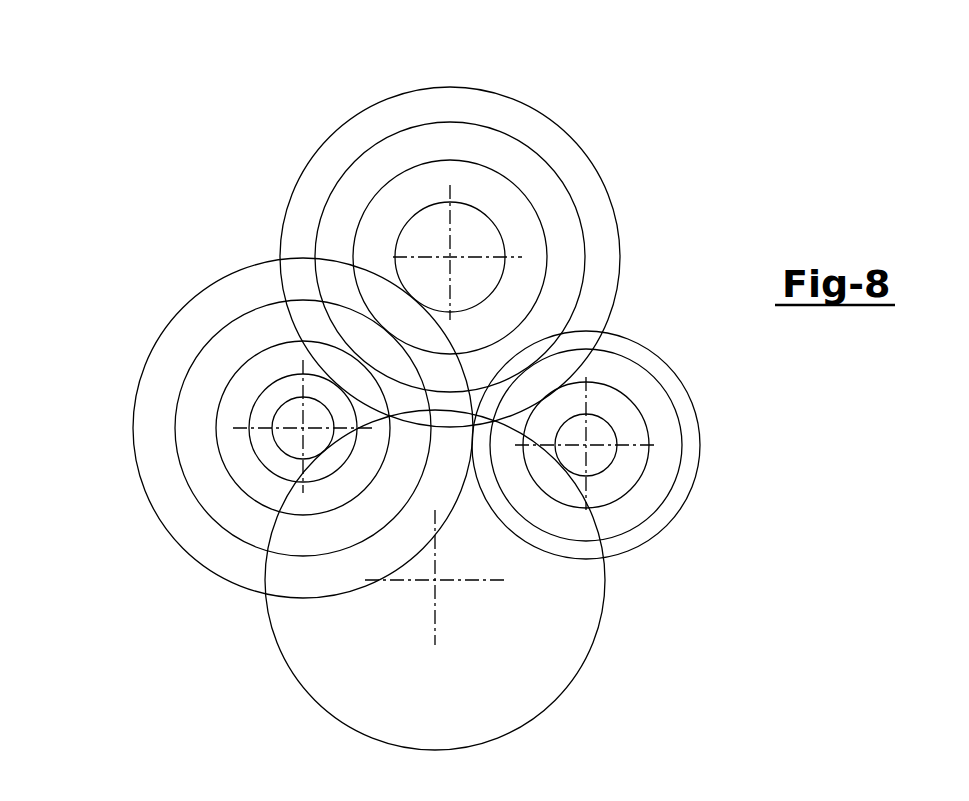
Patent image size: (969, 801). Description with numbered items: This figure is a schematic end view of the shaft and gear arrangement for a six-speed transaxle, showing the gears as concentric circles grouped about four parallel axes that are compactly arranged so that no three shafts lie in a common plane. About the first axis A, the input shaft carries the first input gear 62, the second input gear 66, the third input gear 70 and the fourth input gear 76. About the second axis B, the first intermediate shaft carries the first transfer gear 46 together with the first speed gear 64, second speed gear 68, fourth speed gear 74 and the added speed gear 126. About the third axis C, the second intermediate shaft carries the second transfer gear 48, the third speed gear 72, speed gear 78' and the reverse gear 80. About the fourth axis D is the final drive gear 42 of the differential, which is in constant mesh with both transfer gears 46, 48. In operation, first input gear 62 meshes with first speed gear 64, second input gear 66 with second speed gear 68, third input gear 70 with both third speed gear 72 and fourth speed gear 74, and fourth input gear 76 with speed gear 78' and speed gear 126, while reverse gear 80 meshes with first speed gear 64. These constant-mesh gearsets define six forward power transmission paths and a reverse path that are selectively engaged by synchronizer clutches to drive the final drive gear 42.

The final drive gear 42 is at (597, 640).
The first transfer gear 46 is at (300, 430).
The second transfer gear 48 is at (597, 477).
The first input gear 62 is at (400, 223).
The first speed gear 64 is at (227, 273).
The second input gear 66 is at (495, 170).
The second speed gear 68 is at (203, 343).
The third input gear 70 is at (438, 122).
The third speed gear 72 is at (643, 367).
The fourth speed gear 74 is at (212, 427).
The fourth input gear 76 is at (357, 113).
The speed gear 78' is at (659, 434).
The reverse gear 80 is at (627, 340).
The speed gear 126 is at (260, 397).
The first axis A is at (450, 257).
The second axis B is at (303, 428).
The third axis C is at (586, 445).
The fourth axis D is at (435, 580).